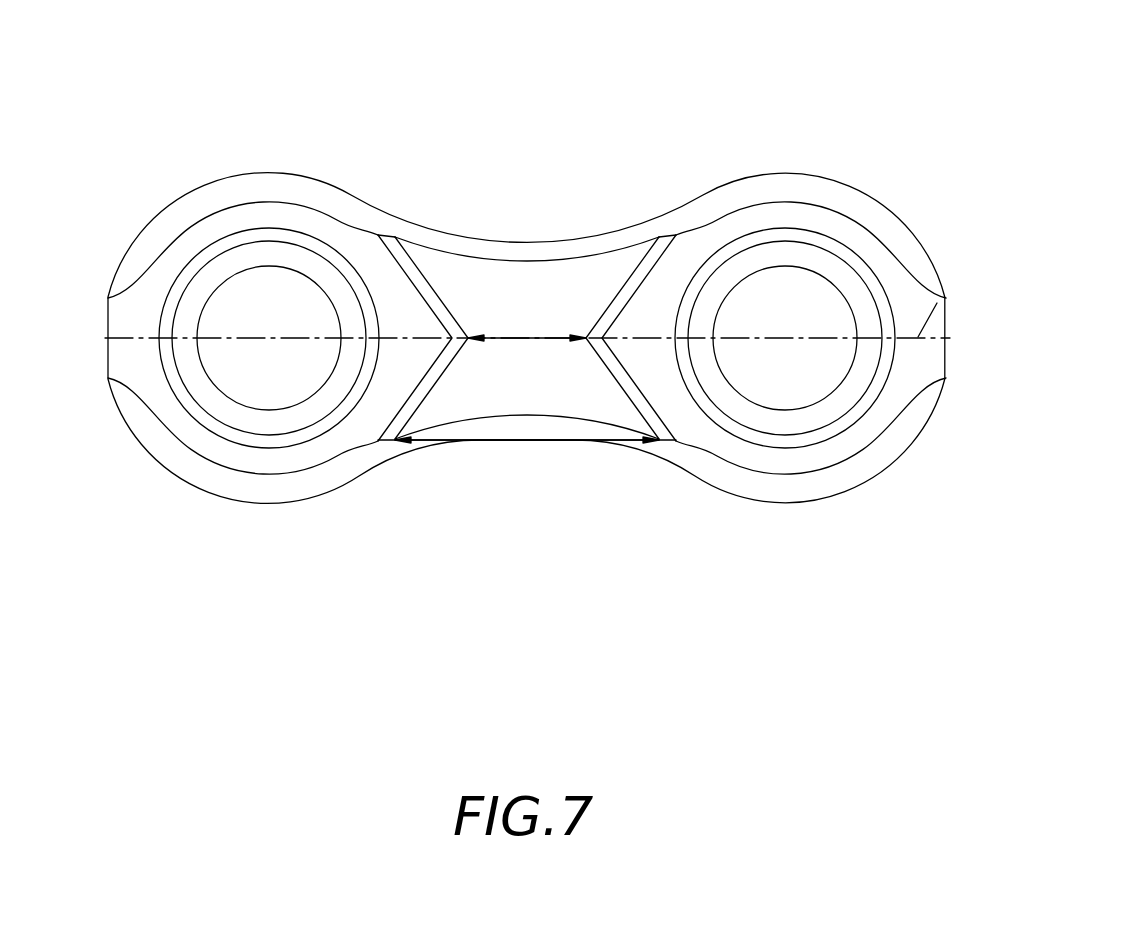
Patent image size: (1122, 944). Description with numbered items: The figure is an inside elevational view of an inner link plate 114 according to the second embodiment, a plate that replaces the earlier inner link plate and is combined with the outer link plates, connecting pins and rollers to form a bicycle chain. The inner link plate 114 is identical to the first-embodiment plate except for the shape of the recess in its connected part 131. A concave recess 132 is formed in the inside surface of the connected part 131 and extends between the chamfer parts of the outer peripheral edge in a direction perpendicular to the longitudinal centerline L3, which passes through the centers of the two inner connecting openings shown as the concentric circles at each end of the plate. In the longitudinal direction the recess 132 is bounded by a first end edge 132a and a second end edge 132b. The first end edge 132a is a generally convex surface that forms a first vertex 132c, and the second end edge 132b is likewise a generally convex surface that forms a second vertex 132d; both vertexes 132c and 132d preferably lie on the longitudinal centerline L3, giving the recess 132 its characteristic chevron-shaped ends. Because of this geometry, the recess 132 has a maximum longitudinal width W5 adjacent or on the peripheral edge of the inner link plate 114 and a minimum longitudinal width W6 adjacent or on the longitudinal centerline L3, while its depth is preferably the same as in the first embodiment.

The inner link plate 114 is at (632, 183).
The connected part 131 is at (567, 408).
The concave recess 132 is at (527, 372).
The first end edge 132a is at (425, 385).
The second end edge 132b is at (635, 388).
The first vertex 132c is at (472, 336).
The second vertex 132d is at (584, 336).
The maximum longitudinal width W5 is at (518, 440).
The minimum longitudinal width W6 is at (498, 337).
The longitudinal centerline L3 is at (943, 293).